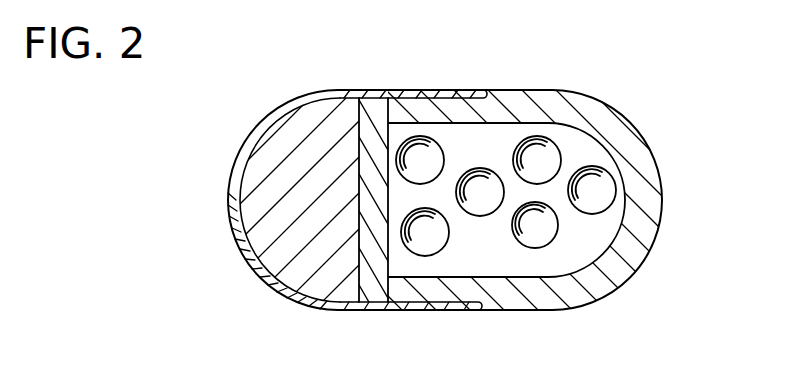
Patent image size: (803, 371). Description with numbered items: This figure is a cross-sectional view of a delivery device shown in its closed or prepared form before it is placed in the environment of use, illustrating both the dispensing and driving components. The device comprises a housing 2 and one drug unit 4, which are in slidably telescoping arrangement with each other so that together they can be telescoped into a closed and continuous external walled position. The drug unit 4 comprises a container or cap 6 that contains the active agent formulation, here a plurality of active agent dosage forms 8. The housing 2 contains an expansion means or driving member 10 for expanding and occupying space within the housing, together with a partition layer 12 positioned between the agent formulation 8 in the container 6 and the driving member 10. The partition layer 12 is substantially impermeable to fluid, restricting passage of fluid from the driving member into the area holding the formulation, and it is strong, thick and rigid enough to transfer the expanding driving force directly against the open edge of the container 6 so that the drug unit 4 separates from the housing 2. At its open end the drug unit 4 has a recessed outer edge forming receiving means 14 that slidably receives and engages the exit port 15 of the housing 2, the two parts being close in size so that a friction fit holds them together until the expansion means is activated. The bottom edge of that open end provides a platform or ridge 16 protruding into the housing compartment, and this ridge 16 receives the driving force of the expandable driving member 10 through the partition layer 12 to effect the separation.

The housing 2 is at (268, 277).
The drug unit 4 is at (663, 188).
The container or cap 6 is at (529, 100).
The active agent dosage forms 8 is at (512, 229).
The driving member 10 is at (268, 222).
The partition layer 12 is at (365, 142).
The receiving means 14 is at (493, 90).
The exit port 15 is at (483, 304).
The ridge 16 is at (380, 102).